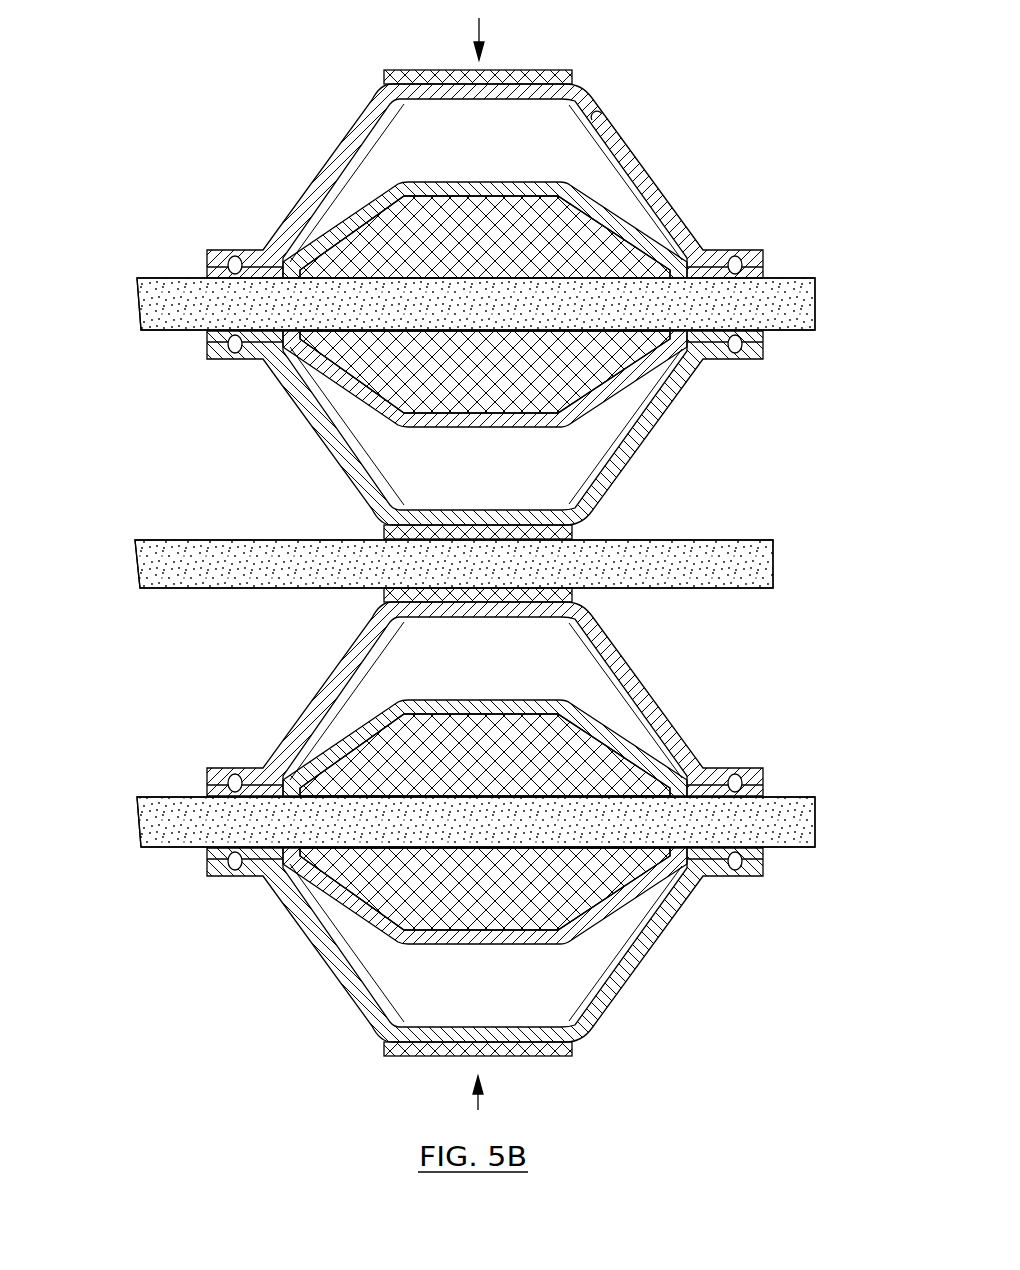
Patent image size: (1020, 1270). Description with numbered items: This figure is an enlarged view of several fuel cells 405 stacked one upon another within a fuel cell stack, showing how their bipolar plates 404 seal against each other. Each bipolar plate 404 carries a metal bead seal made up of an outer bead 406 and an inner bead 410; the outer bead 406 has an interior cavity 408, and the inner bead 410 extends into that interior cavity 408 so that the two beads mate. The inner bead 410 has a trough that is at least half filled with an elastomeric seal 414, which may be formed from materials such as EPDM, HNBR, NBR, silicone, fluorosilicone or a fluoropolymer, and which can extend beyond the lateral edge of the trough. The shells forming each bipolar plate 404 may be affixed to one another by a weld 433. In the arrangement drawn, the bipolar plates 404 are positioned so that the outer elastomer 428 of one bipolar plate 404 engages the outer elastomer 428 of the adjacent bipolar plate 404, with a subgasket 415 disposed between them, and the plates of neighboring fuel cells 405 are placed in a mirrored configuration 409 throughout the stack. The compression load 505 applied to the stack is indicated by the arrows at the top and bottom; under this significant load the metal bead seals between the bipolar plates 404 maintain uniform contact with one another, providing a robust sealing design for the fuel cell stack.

The bipolar plate 404 is at (481, 556).
The fuel cell 405 is at (130, 65).
The outer bead 406 is at (640, 162).
The interior cavity 408 is at (605, 116).
The mirrored configuration 409 is at (85, 65).
The inner bead 410 is at (342, 222).
The elastomeric seal 414 is at (448, 215).
The subgasket 415 is at (788, 324).
The outer elastomer 428 is at (572, 72).
The weld 433 is at (232, 258).
The compression load 505 is at (476, 36).